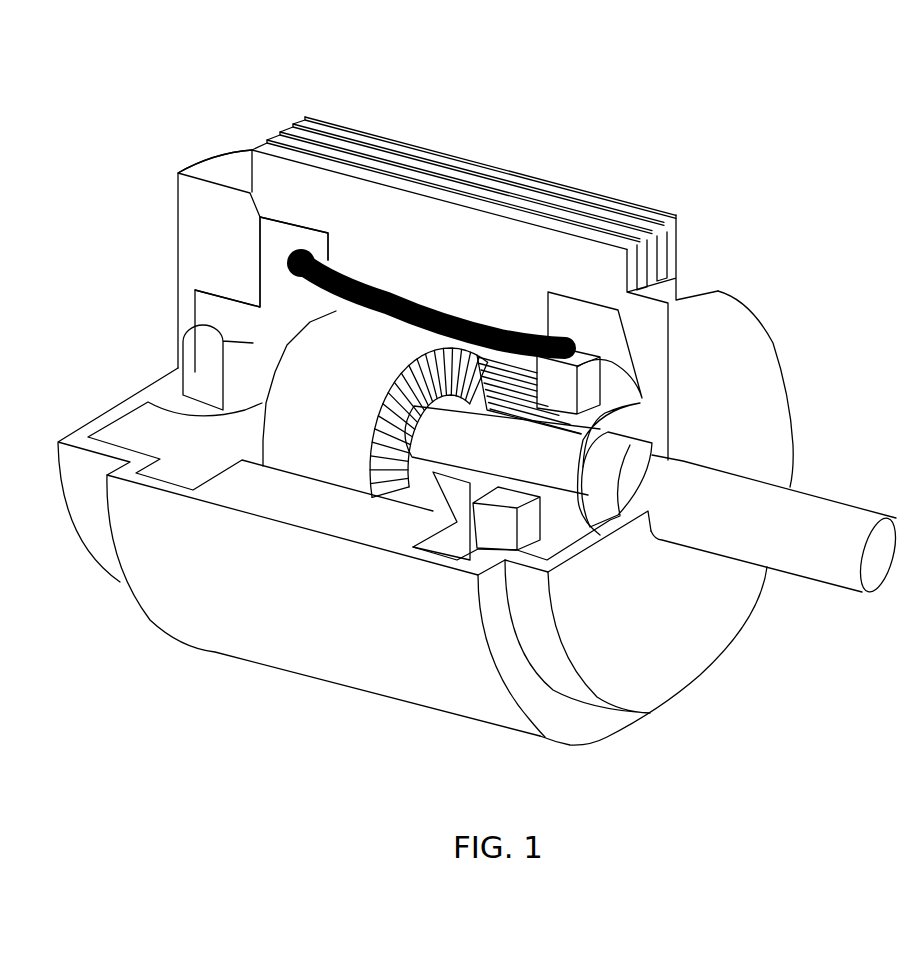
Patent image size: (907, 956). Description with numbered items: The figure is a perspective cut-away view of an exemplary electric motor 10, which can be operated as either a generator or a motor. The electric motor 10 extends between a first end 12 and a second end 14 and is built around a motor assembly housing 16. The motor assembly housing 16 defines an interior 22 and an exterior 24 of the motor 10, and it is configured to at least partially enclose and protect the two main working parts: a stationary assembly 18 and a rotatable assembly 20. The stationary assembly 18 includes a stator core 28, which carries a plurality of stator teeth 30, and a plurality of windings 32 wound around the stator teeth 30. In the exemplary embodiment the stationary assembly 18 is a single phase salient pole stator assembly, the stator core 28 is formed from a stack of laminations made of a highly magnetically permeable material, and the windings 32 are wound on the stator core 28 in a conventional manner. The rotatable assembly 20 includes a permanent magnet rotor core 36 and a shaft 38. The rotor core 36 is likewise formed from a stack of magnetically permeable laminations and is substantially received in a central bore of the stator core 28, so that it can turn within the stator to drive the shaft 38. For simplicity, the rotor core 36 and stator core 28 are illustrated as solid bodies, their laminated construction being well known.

The electric motor 10 is at (754, 151).
The first end 12 is at (105, 108).
The second end 14 is at (863, 238).
The motor assembly housing 16 is at (650, 212).
The stationary assembly 18 is at (380, 285).
The rotatable assembly 20 is at (310, 447).
The interior 22 is at (230, 282).
The exterior 24 is at (221, 146).
The stator core 28 is at (460, 310).
The stator teeth 30 is at (550, 300).
The windings 32 is at (488, 323).
The permanent magnet rotor core 36 is at (373, 497).
The shaft 38 is at (878, 518).